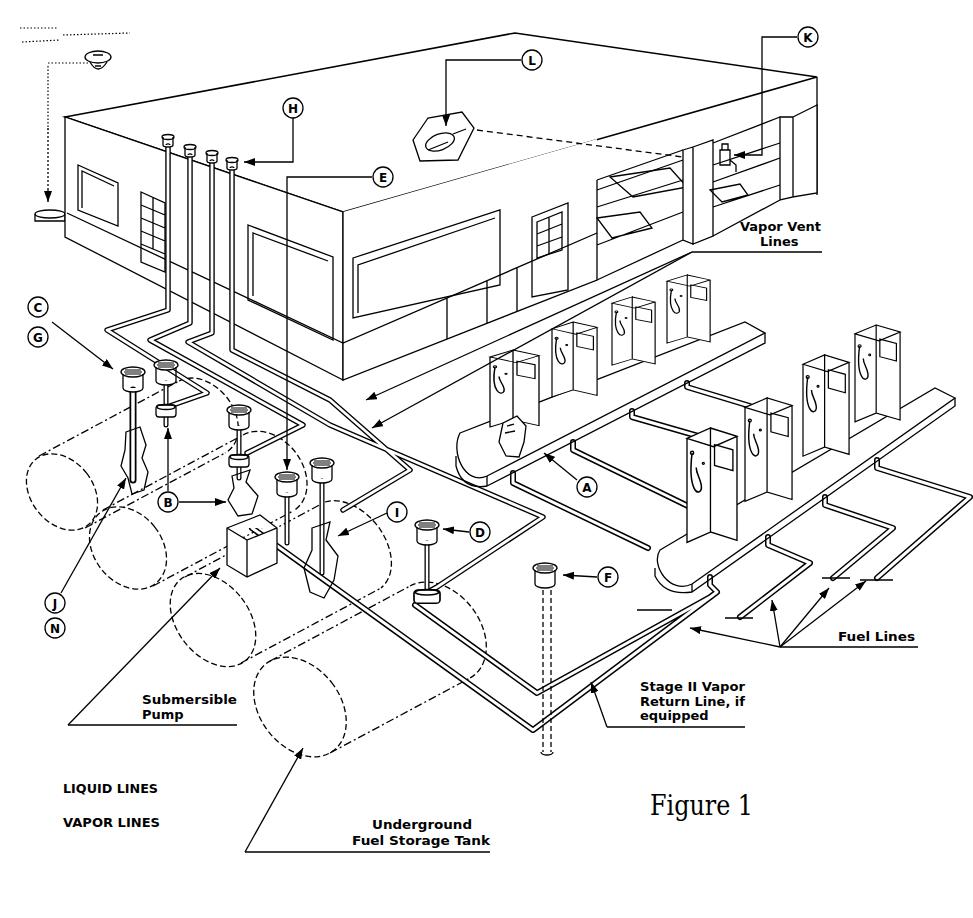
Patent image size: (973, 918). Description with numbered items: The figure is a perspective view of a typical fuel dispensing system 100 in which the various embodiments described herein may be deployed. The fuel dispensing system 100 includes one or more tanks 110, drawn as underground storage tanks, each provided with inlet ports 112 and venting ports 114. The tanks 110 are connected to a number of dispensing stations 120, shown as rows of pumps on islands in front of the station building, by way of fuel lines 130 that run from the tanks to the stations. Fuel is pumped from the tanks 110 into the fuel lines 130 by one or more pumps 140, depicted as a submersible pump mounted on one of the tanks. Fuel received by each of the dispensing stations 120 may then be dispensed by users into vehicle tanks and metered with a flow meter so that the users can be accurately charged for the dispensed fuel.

The fuel dispensing system 100 is at (921, 108).
The tanks 110 is at (127, 572).
The inlet ports 112 is at (118, 374).
The venting ports 114 is at (233, 158).
The dispensing stations 120 is at (643, 298).
The fuel lines 130 is at (520, 677).
The pumps 140 is at (231, 538).